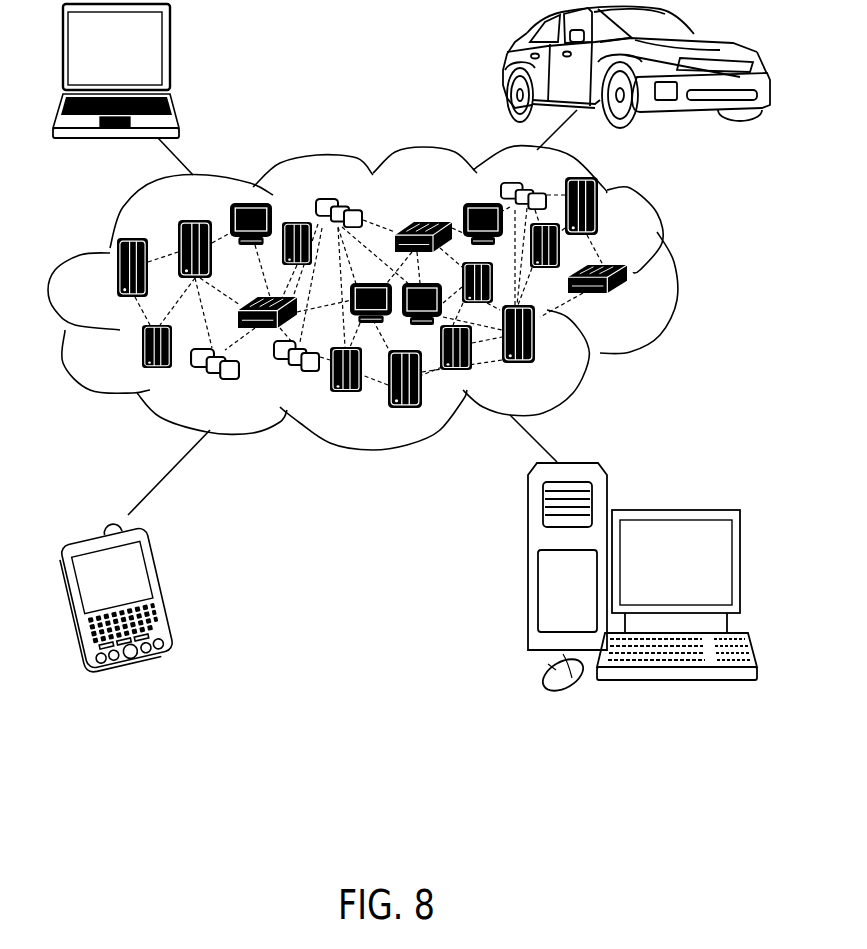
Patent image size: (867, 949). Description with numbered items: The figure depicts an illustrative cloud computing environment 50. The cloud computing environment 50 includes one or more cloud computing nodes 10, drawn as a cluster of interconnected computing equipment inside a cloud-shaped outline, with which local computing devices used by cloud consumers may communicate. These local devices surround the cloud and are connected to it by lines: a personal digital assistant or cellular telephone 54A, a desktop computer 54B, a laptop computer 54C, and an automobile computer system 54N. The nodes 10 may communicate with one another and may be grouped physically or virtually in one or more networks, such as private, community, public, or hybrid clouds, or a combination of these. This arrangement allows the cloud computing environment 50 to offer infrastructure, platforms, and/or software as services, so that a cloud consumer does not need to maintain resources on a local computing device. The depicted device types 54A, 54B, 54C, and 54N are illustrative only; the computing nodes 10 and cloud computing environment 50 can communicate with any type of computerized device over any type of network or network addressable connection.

The cloud computing node 10 is at (637, 302).
The cloud computing environment 50 is at (675, 278).
The personal digital assistant or cellular telephone 54A is at (163, 587).
The desktop computer 54B is at (672, 508).
The laptop computer 54C is at (172, 56).
The automobile computer system 54N is at (507, 69).